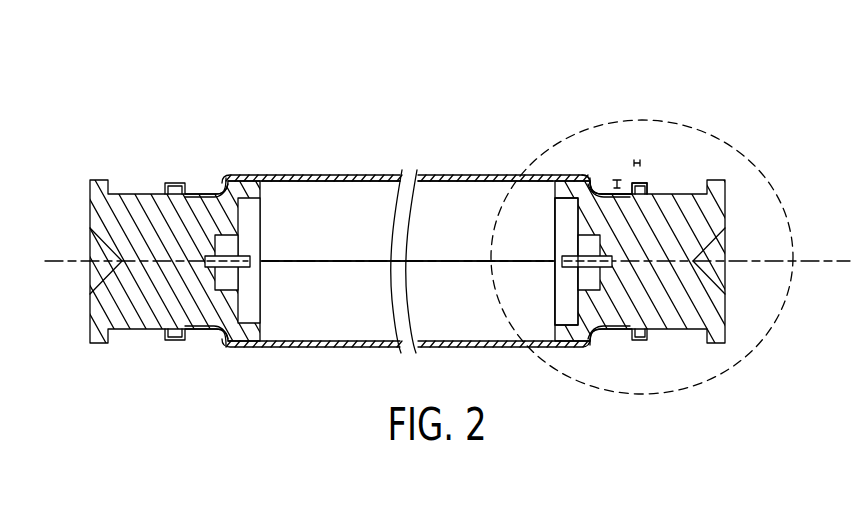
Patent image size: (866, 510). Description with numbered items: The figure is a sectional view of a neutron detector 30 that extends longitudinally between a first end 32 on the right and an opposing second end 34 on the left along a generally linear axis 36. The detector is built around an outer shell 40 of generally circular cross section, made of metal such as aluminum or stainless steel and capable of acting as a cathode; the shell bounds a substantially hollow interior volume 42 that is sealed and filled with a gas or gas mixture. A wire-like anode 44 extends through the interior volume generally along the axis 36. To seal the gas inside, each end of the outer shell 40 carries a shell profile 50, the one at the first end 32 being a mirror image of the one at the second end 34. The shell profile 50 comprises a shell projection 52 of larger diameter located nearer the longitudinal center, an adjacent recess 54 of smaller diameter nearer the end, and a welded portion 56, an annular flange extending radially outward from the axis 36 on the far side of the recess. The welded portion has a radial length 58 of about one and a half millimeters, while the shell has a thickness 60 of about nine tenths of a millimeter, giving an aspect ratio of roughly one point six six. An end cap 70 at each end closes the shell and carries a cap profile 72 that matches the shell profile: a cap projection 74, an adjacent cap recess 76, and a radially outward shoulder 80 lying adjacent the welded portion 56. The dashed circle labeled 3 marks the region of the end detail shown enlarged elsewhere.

The neutron detector 30 is at (98, 76).
The first end 32 is at (725, 315).
The second end 34 is at (89, 181).
The axis 36 is at (815, 260).
The outer shell 40 is at (357, 176).
The interior volume 42 is at (290, 195).
The anode 44 is at (330, 266).
The shell profile 50 is at (197, 160).
The shell projection 52 is at (590, 178).
The recess 54 is at (599, 188).
The welded portion 56 is at (641, 189).
The radial length 58 is at (614, 176).
The thickness 60 is at (634, 160).
The end cap 70 is at (90, 222).
The cap profile 72 is at (233, 216).
The cap projection 74 is at (578, 186).
The cap recess 76 is at (638, 206).
The shoulder 80 is at (648, 191).
The detail area of FIG. 3 is at (749, 142).